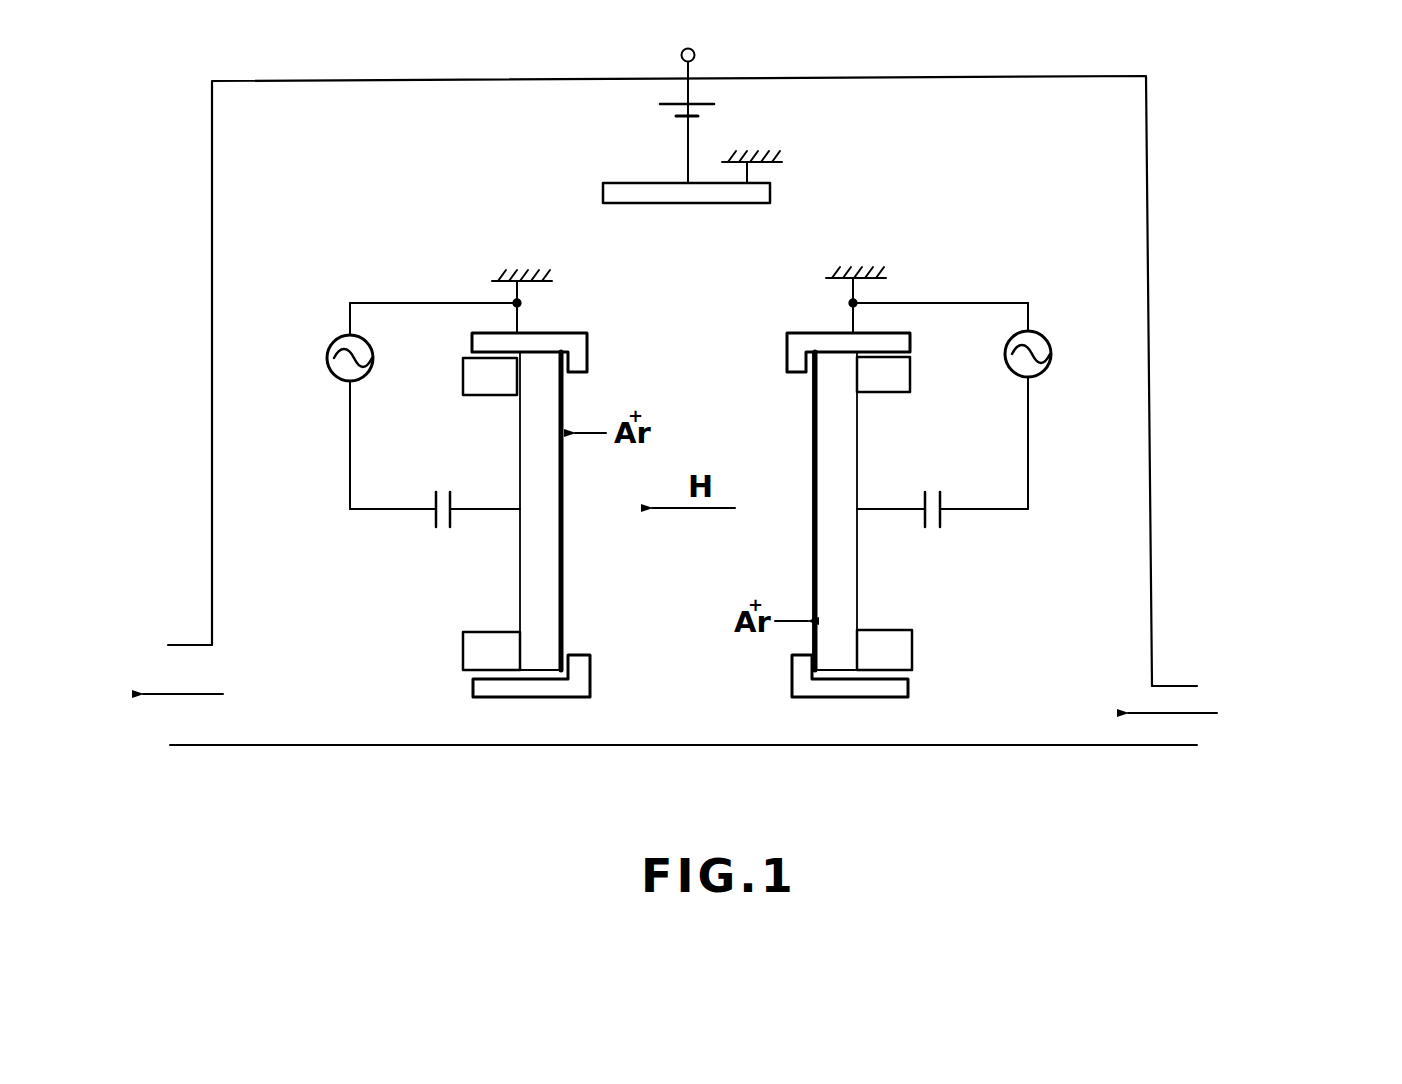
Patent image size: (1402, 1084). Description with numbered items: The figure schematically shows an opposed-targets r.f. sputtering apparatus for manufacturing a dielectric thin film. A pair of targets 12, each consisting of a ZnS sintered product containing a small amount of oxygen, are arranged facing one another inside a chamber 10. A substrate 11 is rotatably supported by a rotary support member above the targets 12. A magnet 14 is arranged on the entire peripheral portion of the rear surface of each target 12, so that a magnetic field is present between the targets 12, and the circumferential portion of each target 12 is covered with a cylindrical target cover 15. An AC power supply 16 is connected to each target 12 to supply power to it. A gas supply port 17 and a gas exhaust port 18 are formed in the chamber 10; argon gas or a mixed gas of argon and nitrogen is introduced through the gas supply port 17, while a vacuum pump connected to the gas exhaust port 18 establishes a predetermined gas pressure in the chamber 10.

The chamber 10 is at (1040, 75).
The substrate 11 is at (620, 183).
The target 12 is at (565, 611).
The magnet 14 is at (463, 382).
The target cover 15 is at (580, 333).
The AC power supply 16 is at (327, 362).
The gas supply port 17 is at (1188, 686).
The gas exhaust port 18 is at (174, 645).